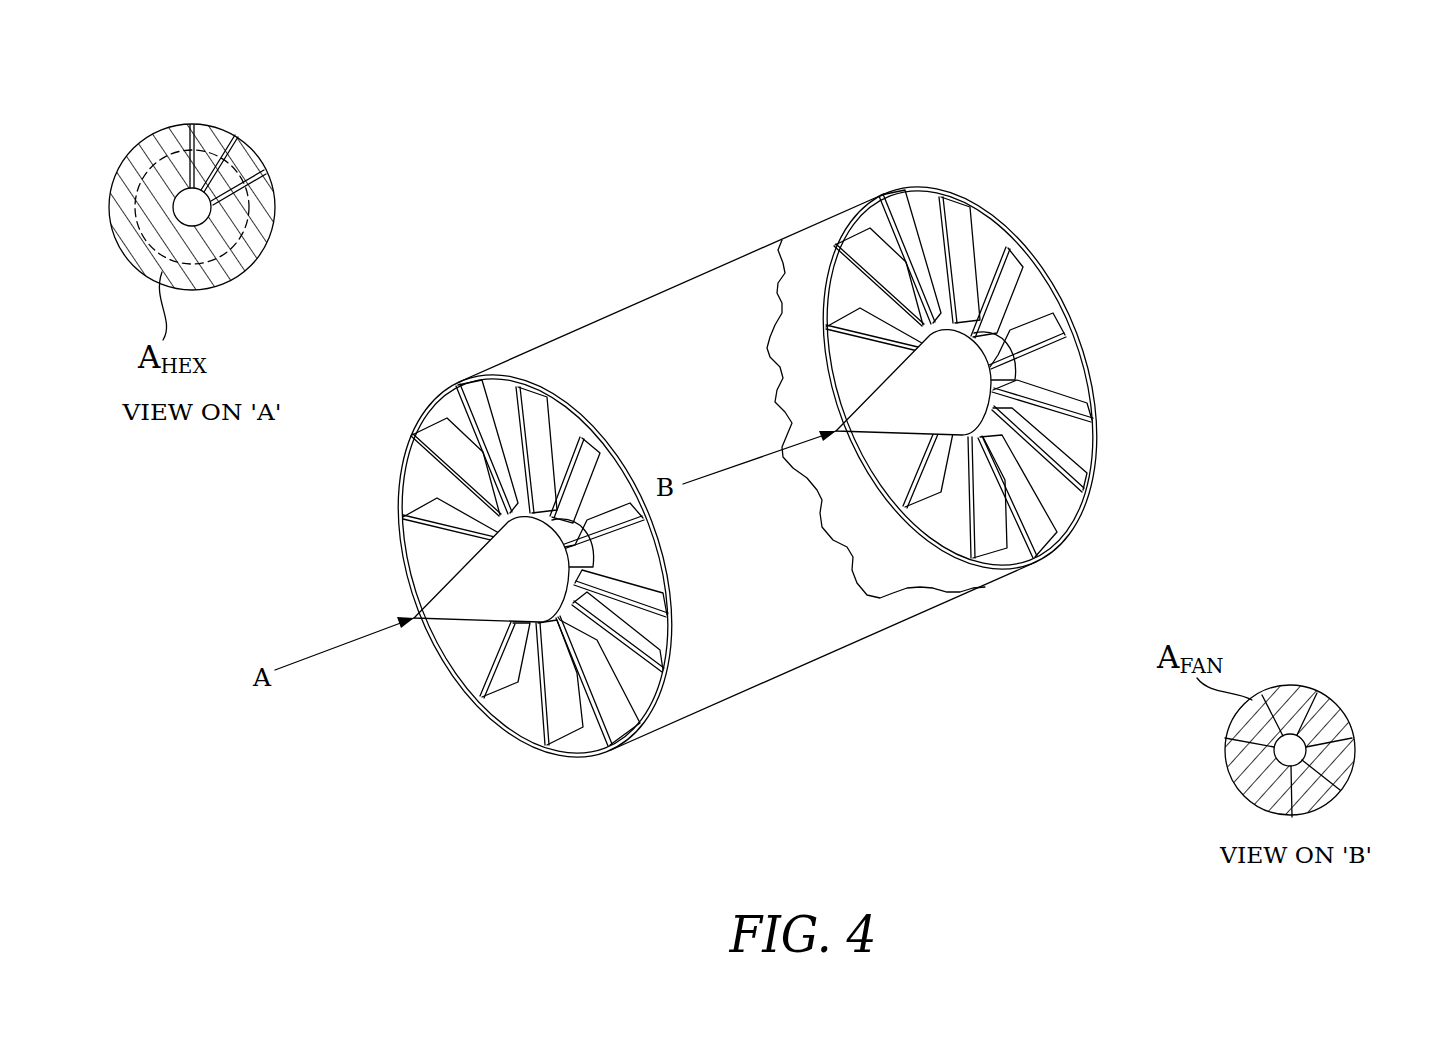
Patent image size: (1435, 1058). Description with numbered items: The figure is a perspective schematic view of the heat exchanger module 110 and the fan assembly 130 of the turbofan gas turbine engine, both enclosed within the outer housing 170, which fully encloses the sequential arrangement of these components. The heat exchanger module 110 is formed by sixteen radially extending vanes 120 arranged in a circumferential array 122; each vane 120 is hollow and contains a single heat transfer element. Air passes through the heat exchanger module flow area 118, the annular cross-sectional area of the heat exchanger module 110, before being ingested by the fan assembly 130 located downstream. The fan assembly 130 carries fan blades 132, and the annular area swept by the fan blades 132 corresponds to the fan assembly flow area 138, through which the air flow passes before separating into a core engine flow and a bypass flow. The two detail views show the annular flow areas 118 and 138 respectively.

The heat exchanger module 110 is at (497, 720).
The heat exchanger module flow area 118 is at (215, 267).
The radially extending vanes 120 is at (437, 422).
The circumferential array 122 is at (453, 420).
The fan assembly 130 is at (1017, 547).
The fan blades 132 is at (866, 255).
The fan assembly flow area 138 is at (1297, 700).
The outer housing 170 is at (665, 288).